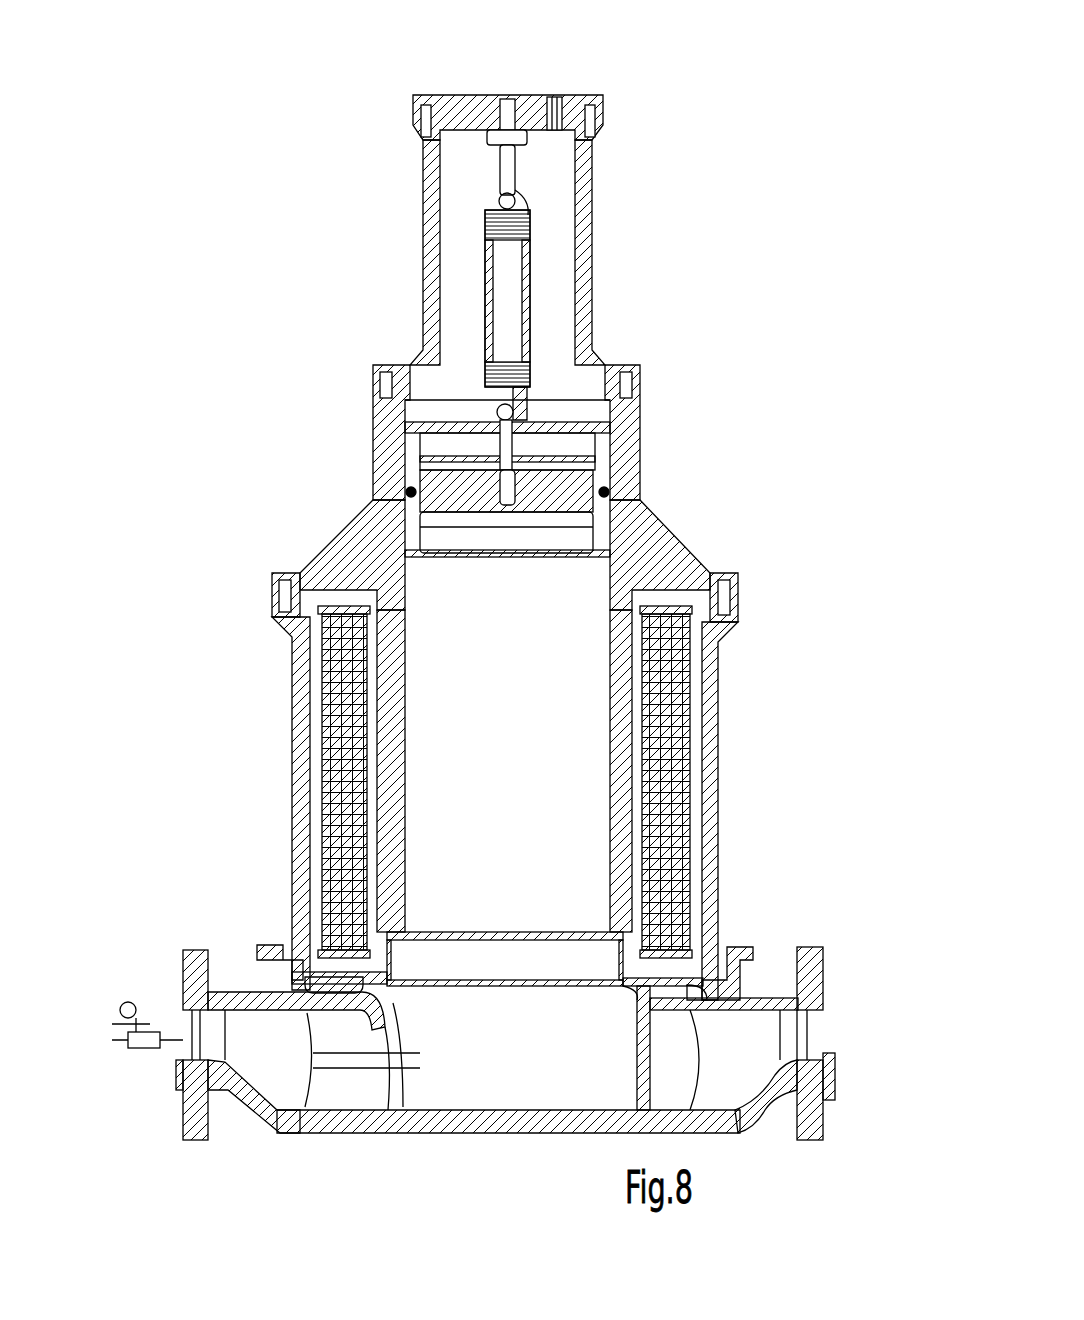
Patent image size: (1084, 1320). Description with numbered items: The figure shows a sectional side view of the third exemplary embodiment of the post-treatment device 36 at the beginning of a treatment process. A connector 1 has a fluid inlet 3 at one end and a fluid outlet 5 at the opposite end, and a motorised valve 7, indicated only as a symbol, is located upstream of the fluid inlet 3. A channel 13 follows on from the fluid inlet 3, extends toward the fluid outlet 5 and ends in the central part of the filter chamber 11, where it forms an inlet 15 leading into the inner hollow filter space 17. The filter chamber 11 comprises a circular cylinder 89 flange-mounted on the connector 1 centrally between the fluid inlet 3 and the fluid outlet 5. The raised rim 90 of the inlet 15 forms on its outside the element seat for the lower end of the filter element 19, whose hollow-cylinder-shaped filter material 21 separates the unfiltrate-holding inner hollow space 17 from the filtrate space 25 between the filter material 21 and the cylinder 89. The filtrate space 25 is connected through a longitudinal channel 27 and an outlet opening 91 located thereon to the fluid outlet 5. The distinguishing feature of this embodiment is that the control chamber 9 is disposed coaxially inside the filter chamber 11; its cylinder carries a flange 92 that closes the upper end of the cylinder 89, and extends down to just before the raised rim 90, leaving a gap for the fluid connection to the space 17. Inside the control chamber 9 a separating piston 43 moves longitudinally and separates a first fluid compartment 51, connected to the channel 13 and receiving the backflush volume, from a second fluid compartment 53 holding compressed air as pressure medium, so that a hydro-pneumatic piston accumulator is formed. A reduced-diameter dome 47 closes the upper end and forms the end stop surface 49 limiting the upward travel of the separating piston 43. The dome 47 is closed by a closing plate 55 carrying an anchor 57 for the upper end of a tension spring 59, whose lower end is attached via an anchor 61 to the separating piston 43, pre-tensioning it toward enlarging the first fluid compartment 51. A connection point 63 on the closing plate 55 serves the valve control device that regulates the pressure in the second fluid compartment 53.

The connector 1 is at (300, 985).
The fluid inlet 3 is at (172, 1058).
The fluid outlet 5 is at (832, 1060).
The motorised valve 7 is at (140, 1010).
The control chamber 9 is at (392, 732).
The filter chamber 11 is at (715, 892).
The channel 13 is at (425, 1040).
The inlet 15 is at (392, 952).
The inner hollow filter space 17 is at (380, 832).
The filter element 19 is at (690, 674).
The filter material 21 is at (340, 668).
The filtrate space 25 is at (318, 703).
The longitudinal channel 27 is at (725, 952).
The post-treatment device 36 is at (268, 413).
The separating piston 43 is at (395, 473).
The dome 47 is at (595, 215).
The end stop surface 49 is at (575, 420).
The first fluid compartment 51 is at (640, 880).
The second fluid compartment 53 is at (458, 345).
The closing plate 55 is at (465, 102).
The anchor 57 is at (505, 170).
The tension spring 59 is at (490, 292).
The anchor 61 is at (625, 428).
The connection point 63 is at (555, 105).
The circular cylinder 89 is at (712, 732).
The raised rim 90 is at (588, 932).
The outlet opening 91 is at (692, 992).
The flange 92 is at (688, 596).